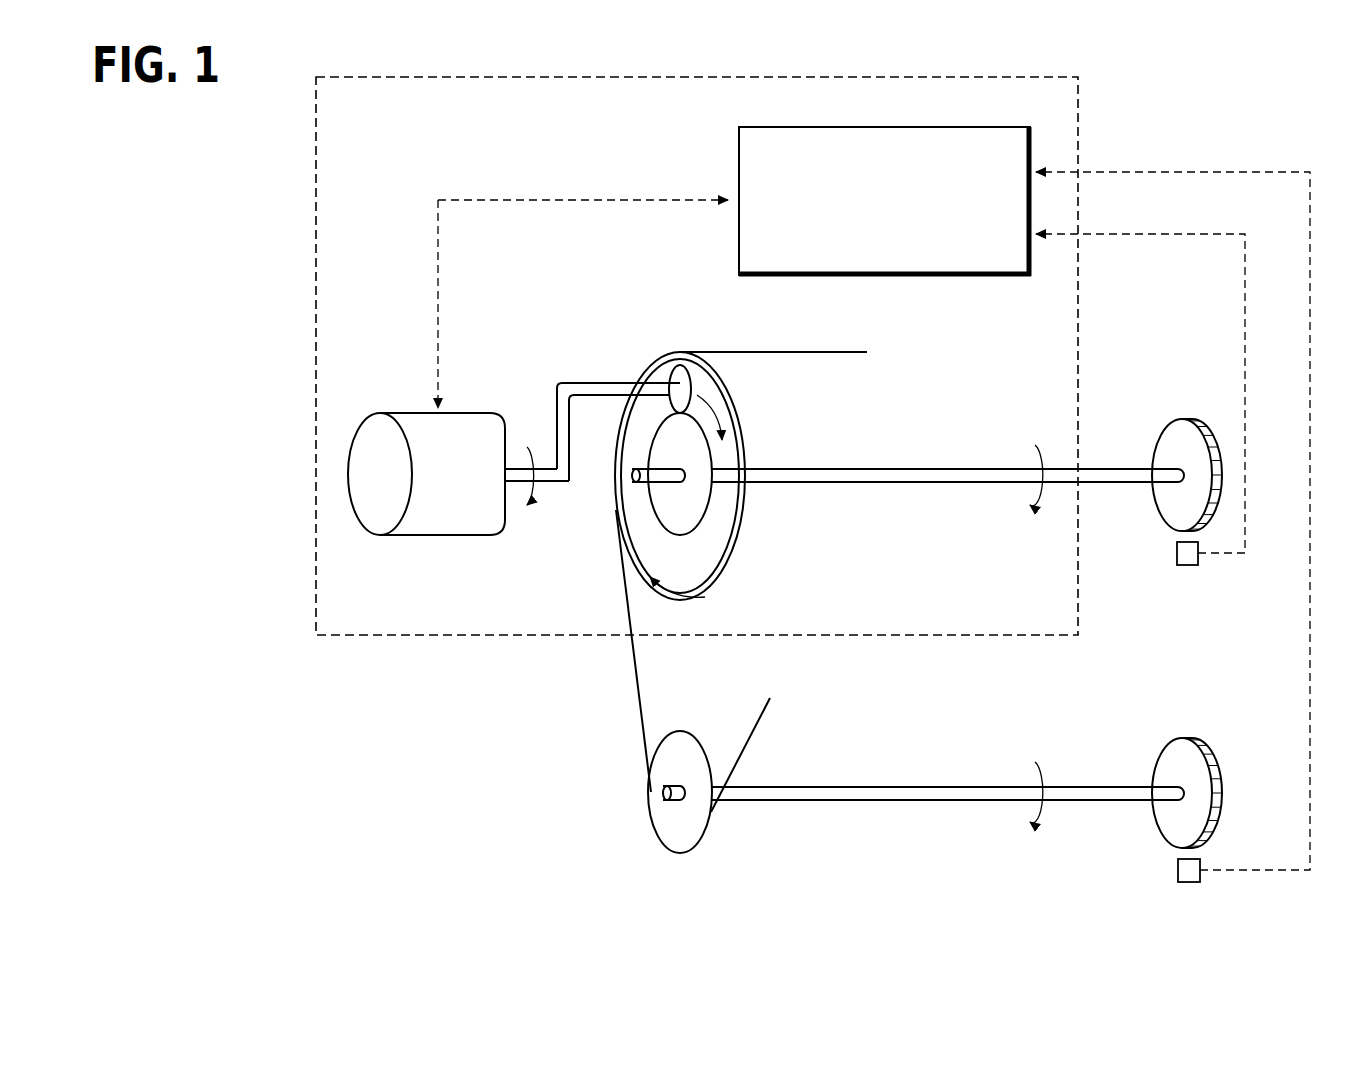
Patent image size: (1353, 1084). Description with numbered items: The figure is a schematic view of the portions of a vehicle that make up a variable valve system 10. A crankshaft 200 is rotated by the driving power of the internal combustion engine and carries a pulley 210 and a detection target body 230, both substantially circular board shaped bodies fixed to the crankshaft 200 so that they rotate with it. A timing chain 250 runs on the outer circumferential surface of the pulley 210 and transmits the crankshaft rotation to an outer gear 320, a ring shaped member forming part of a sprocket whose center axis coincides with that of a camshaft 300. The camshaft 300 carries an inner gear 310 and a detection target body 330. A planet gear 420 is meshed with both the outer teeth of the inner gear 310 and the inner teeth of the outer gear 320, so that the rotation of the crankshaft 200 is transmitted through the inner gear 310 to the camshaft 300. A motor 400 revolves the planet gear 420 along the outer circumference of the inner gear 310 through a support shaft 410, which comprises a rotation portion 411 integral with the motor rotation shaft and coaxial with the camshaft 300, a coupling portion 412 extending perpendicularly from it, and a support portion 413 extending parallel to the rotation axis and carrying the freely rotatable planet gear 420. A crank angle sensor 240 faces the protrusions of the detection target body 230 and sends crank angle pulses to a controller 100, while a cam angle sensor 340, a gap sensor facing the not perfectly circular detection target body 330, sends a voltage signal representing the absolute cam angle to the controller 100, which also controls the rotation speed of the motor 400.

The variable valve system 10 is at (314, 392).
The controller 100 is at (885, 127).
The crankshaft 200 is at (934, 802).
The pulley 210 is at (700, 740).
The detection target body 230 is at (1163, 753).
The crank angle sensor 240 is at (1190, 883).
The timing chain 250 is at (772, 352).
The camshaft 300 is at (950, 483).
The inner gear 310 is at (705, 516).
The outer gear 320 is at (744, 497).
The detection target body 330 is at (1153, 448).
The cam angle sensor 340 is at (1184, 566).
The motor 400 is at (438, 537).
The support shaft 410 is at (561, 361).
The rotation portion 411 is at (523, 462).
The coupling portion 412 is at (553, 420).
The support portion 413 is at (622, 340).
The planet gear 420 is at (686, 384).